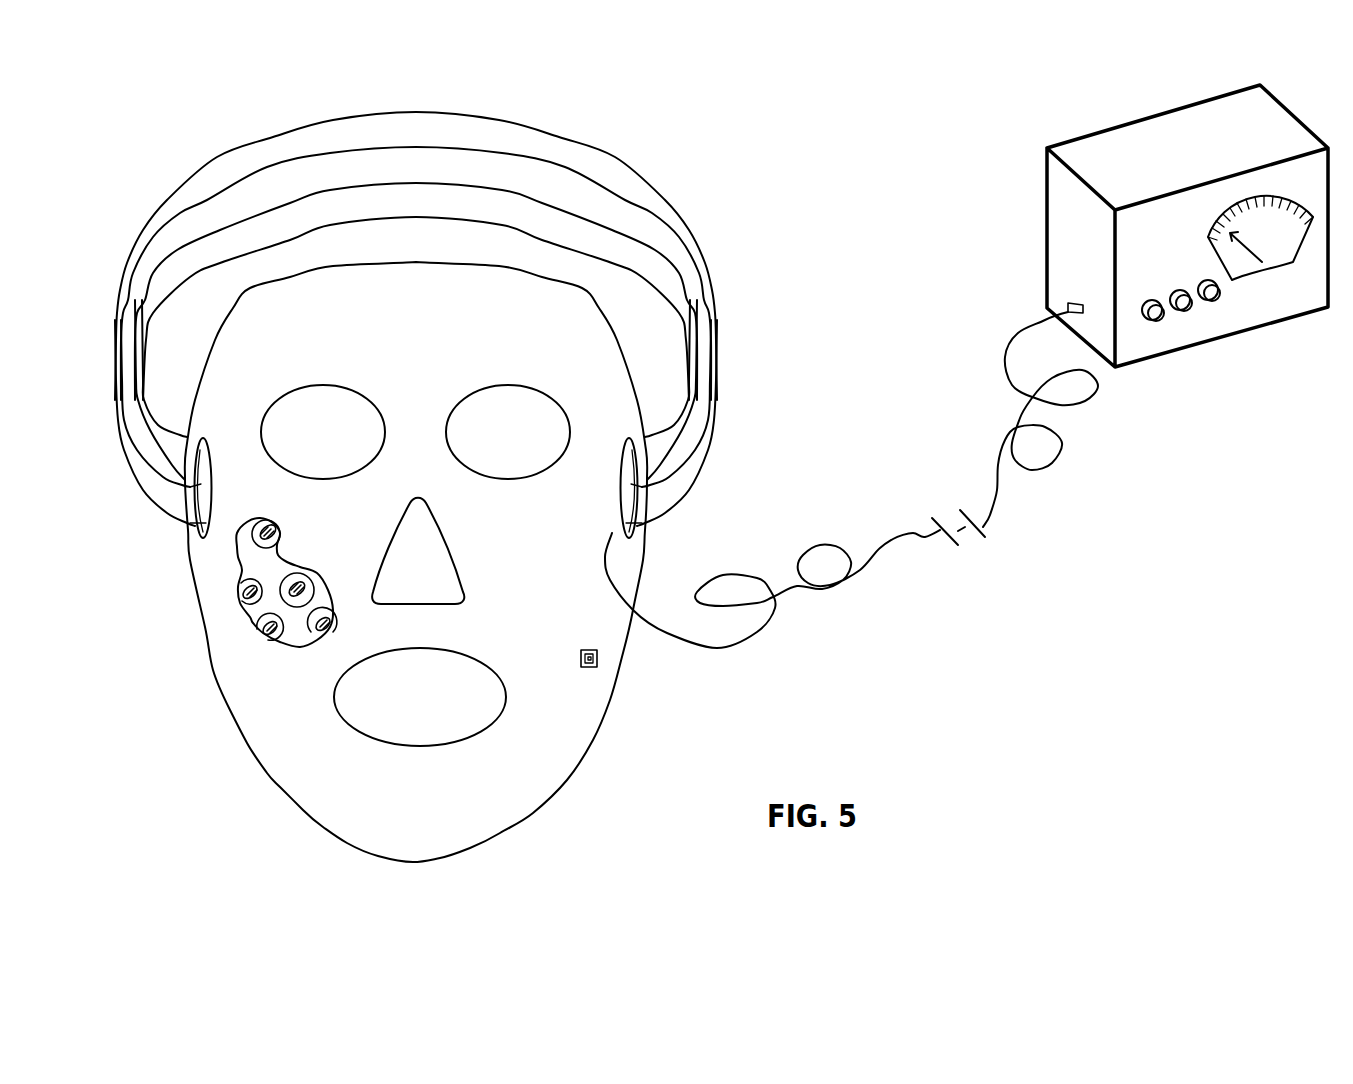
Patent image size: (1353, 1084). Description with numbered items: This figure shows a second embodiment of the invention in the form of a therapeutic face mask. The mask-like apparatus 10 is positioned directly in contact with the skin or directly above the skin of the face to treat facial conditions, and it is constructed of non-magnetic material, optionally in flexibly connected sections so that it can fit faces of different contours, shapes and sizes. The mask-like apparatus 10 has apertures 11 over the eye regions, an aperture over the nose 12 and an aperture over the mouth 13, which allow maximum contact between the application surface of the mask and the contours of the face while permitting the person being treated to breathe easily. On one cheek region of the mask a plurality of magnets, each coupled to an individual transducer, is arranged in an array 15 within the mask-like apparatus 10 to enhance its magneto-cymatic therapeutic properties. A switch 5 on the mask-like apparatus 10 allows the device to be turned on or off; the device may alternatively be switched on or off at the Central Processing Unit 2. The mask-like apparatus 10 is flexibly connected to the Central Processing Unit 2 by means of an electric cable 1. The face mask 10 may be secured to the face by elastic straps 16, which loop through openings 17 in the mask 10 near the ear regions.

The electric cable 1 is at (913, 533).
The Central Processing Unit 2 is at (1168, 159).
The switch 5 is at (598, 659).
The mask-like apparatus 10 is at (280, 780).
The apertures 11 is at (306, 446).
The nose aperture 12 is at (404, 572).
The mouth aperture 13 is at (405, 709).
The array 15 is at (258, 618).
The elastic straps 16 is at (147, 470).
The openings 17 is at (192, 536).